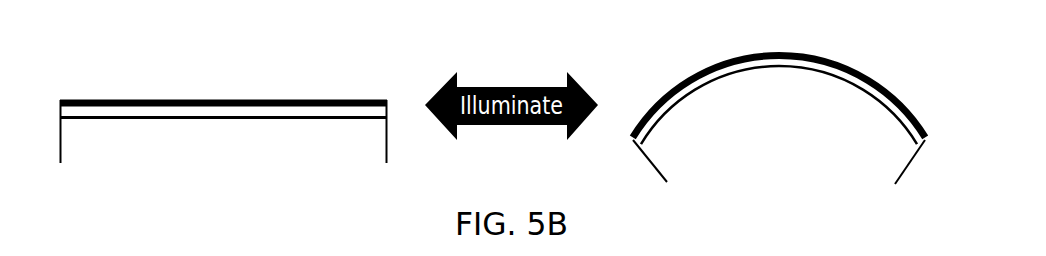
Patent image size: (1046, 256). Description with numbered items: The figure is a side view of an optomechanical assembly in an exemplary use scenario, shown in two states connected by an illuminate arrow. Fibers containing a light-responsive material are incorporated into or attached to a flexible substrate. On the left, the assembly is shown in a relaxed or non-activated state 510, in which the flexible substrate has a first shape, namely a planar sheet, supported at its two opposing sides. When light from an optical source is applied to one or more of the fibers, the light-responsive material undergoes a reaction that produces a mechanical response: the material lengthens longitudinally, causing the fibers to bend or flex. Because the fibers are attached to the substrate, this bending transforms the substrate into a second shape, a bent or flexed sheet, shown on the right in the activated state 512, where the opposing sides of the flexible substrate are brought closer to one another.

The relaxed or non-activated state 510 is at (222, 109).
The activated state 512 is at (771, 135).